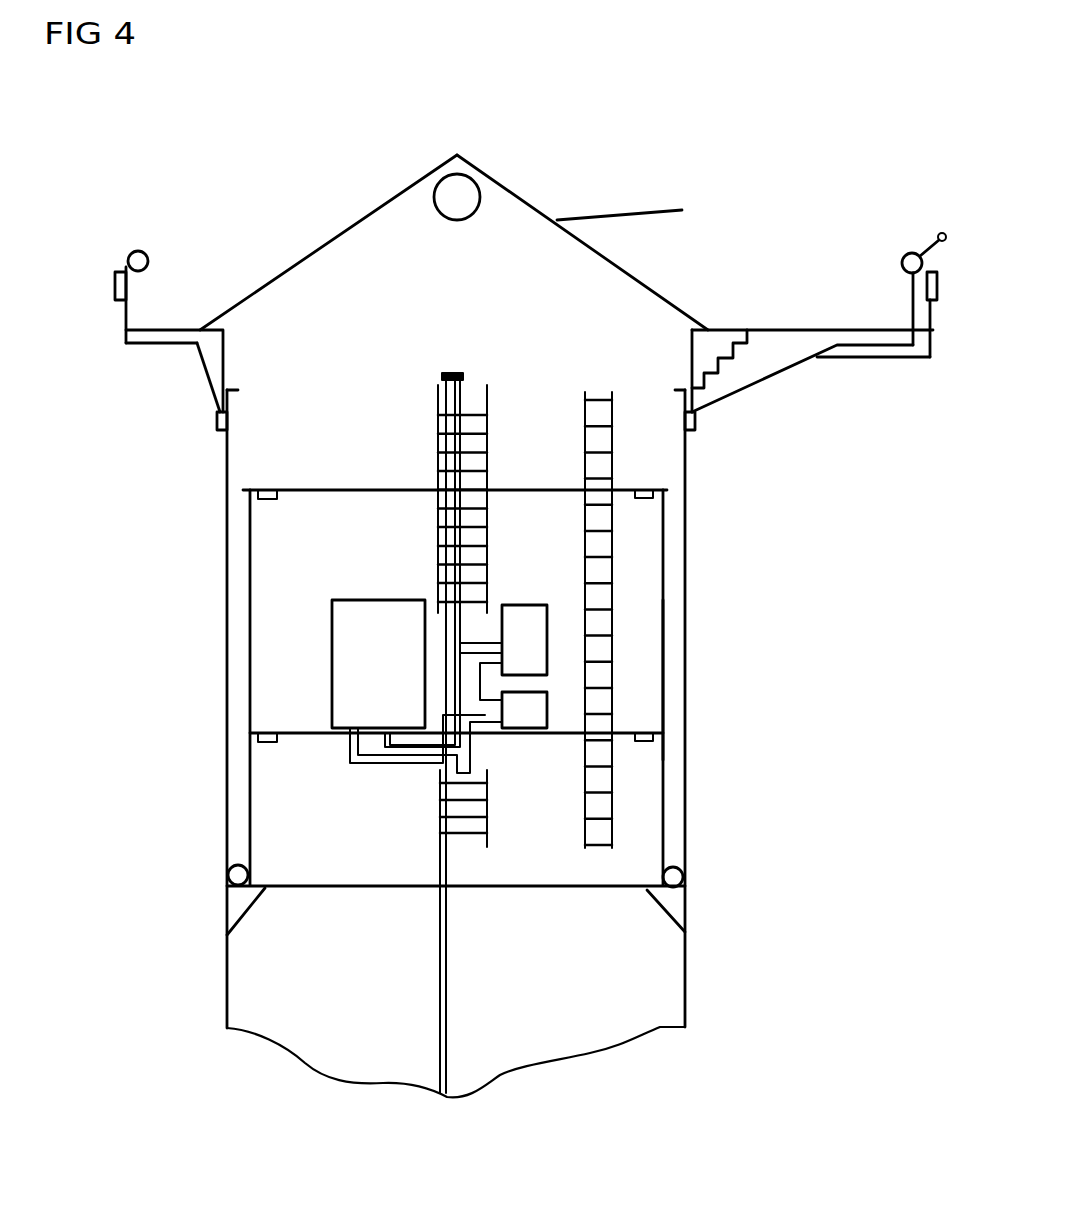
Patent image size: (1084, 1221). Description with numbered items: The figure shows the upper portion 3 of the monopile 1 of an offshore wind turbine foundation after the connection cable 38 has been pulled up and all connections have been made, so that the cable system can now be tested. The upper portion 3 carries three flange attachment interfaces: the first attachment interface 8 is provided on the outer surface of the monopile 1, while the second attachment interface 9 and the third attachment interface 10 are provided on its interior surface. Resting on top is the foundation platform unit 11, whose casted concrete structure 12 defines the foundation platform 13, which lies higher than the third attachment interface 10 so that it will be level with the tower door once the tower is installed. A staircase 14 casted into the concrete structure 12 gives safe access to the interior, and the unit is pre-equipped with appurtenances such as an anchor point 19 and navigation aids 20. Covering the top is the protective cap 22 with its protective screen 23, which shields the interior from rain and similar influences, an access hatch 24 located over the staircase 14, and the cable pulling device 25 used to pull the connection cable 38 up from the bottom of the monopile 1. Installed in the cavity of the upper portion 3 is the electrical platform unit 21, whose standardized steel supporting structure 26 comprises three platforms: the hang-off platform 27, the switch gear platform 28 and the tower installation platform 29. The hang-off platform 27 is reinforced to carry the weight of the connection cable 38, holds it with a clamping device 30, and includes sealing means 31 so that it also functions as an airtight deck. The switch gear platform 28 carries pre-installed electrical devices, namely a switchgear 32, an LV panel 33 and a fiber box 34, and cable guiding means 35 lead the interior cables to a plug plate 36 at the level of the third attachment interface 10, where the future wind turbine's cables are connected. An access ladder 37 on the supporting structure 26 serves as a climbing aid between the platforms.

The monopile 1 is at (687, 772).
The upper portion 3 is at (384, 219).
The first attachment interface 8 is at (217, 422).
The second attachment interface 9 is at (242, 903).
The third attachment interface 10 is at (233, 387).
The foundation platform unit 11 is at (212, 367).
The concrete structure 12 is at (772, 363).
The foundation platform 13 is at (795, 327).
The staircase 14 is at (725, 362).
The anchor point 19 is at (942, 233).
The navigation aids 20 is at (115, 285).
The electrical platform unit 21 is at (663, 667).
The protective cap 22 is at (312, 250).
The protective screen 23 is at (507, 187).
The access hatch 24 is at (625, 208).
The cable pulling device 25 is at (458, 190).
The supporting structure 26 is at (250, 585).
The hang-off platform 27 is at (293, 885).
The switch gear platform 28 is at (297, 732).
The tower installation platform 29 is at (297, 490).
The clamping device 30 is at (439, 805).
The sealing means 31 is at (687, 878).
The switchgear 32 is at (332, 657).
The LV panel 33 is at (548, 635).
The fiber box 34 is at (548, 713).
The cable guiding means 35 is at (487, 452).
The plug plate 36 is at (463, 377).
The access ladder 37 is at (612, 567).
The connection cable 38 is at (445, 1010).